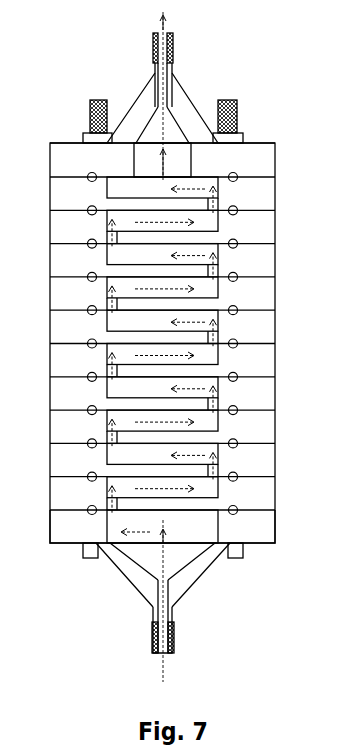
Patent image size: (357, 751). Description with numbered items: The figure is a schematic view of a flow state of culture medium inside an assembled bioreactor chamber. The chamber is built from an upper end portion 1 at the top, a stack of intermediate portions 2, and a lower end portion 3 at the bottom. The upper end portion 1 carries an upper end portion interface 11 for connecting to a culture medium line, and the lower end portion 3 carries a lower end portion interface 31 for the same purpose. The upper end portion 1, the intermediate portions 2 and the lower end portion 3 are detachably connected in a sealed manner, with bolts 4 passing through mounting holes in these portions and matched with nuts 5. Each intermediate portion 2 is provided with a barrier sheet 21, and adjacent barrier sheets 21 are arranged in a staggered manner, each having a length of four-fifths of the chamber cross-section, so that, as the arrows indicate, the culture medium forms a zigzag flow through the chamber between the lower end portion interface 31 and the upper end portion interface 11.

The upper end portion 1 is at (253, 163).
The upper end portion interface 11 is at (173, 52).
The intermediate portion 2 is at (253, 230).
The barrier sheet 21 is at (165, 505).
The lower end portion 3 is at (253, 528).
The lower end portion interface 31 is at (173, 637).
The bolt 4 is at (232, 113).
The nut 5 is at (85, 133).